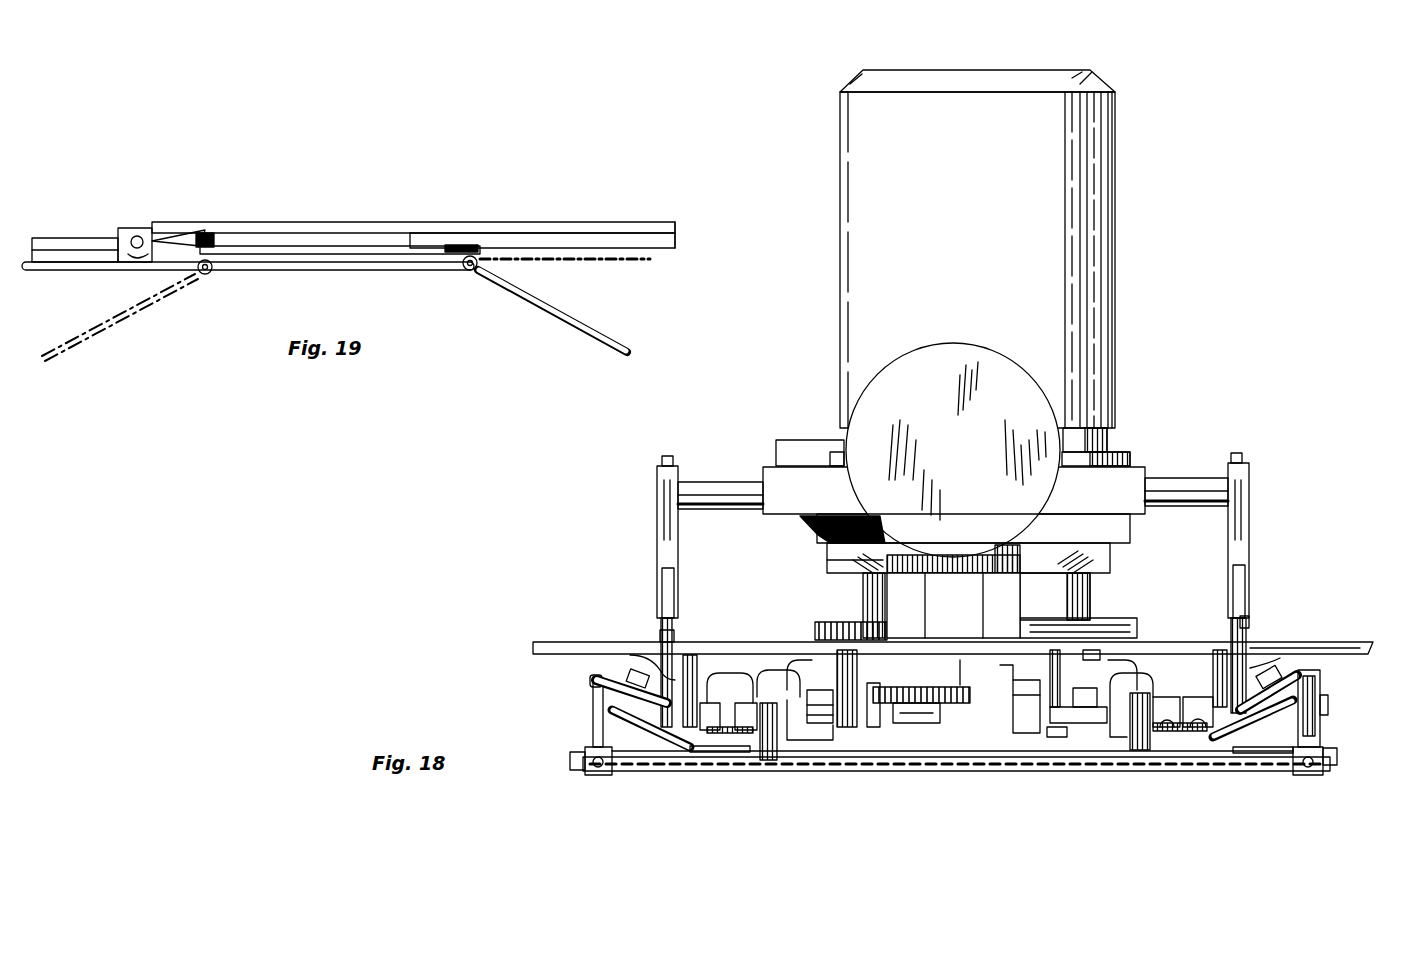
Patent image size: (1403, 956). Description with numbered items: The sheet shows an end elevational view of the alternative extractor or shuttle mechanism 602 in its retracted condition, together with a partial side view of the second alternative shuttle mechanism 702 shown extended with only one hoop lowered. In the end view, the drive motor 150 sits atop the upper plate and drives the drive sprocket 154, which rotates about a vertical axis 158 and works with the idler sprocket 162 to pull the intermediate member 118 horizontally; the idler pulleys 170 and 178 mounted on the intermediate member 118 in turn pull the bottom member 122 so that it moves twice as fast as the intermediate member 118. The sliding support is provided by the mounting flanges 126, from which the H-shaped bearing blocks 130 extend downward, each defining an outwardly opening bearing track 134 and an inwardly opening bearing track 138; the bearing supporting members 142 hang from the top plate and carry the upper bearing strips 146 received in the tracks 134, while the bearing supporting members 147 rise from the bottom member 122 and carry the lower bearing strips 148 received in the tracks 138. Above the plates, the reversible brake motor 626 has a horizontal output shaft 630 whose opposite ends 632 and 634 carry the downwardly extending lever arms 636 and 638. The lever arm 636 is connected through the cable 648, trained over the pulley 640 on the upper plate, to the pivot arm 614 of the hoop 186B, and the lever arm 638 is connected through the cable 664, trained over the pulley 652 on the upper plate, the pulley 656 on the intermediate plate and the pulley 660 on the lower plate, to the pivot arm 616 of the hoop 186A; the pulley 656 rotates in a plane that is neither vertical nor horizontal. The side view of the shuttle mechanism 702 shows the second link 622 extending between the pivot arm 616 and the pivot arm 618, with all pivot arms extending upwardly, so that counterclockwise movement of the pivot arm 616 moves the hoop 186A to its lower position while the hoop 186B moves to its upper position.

In FIG. 18, the drive motor 150 is at (988, 207).
In FIG. 18, the shuttle mechanism 602 is at (1202, 298).
In FIG. 18, the motor 626 is at (982, 467).
In FIG. 18, the output shaft 630 is at (742, 482).
In FIG. 18, the shaft end 632 is at (702, 462).
In FIG. 18, the shaft end 634 is at (1212, 455).
In FIG. 18, the lever arm 636 is at (657, 516).
In FIG. 18, the lever arm 638 is at (1250, 518).
In FIG. 18, the vertical axis 158 is at (988, 635).
In FIG. 19, the intermediate member 118 is at (676, 237).
In FIG. 18, the intermediate member 118 is at (935, 733).
In FIG. 19, the bottom member 122 is at (90, 240).
In FIG. 18, the bottom member 122 is at (772, 722).
In FIG. 18, the pivot arm 614 is at (593, 732).
In FIG. 19, the cable 664 is at (338, 222).
In FIG. 18, the cable 664 is at (598, 712).
In FIG. 18, the pulley 656 is at (1301, 680).
In FIG. 19, the pulley 660 is at (140, 228).
In FIG. 18, the pulley 660 is at (1322, 718).
In FIG. 18, the bearing strip 148 is at (780, 697).
In FIG. 18, the bearing track 134 is at (705, 730).
In FIG. 18, the bearing block 130 is at (745, 730).
In FIG. 18, the bearing track 138 is at (762, 740).
In FIG. 18, the idler pulley 178 is at (825, 720).
In FIG. 18, the bearing supporting member 142 is at (680, 700).
In FIG. 18, the mounting flange 126 is at (746, 700).
In FIG. 18, the bearing strip 146 is at (720, 700).
In FIG. 18, the idler sprocket 162 is at (1001, 691).
In FIG. 18, the bearing supporting member 147 is at (840, 690).
In FIG. 18, the drive sprocket 154 is at (996, 697).
In FIG. 18, the idler pulley 170 is at (1070, 726).
In FIG. 18, the cable 648 is at (660, 634).
In FIG. 18, the pulley 640 is at (640, 655).
In FIG. 18, the pulley 652 is at (1258, 668).
In FIG. 19, the shuttle mechanism 702 is at (403, 182).
In FIG. 19, the pivot arm 616 is at (212, 232).
In FIG. 19, the pivot arm 618 is at (472, 250).
In FIG. 19, the second link 622 is at (262, 258).
In FIG. 19, the hoop 186A is at (80, 332).
In FIG. 19, the hoop 186B is at (580, 326).